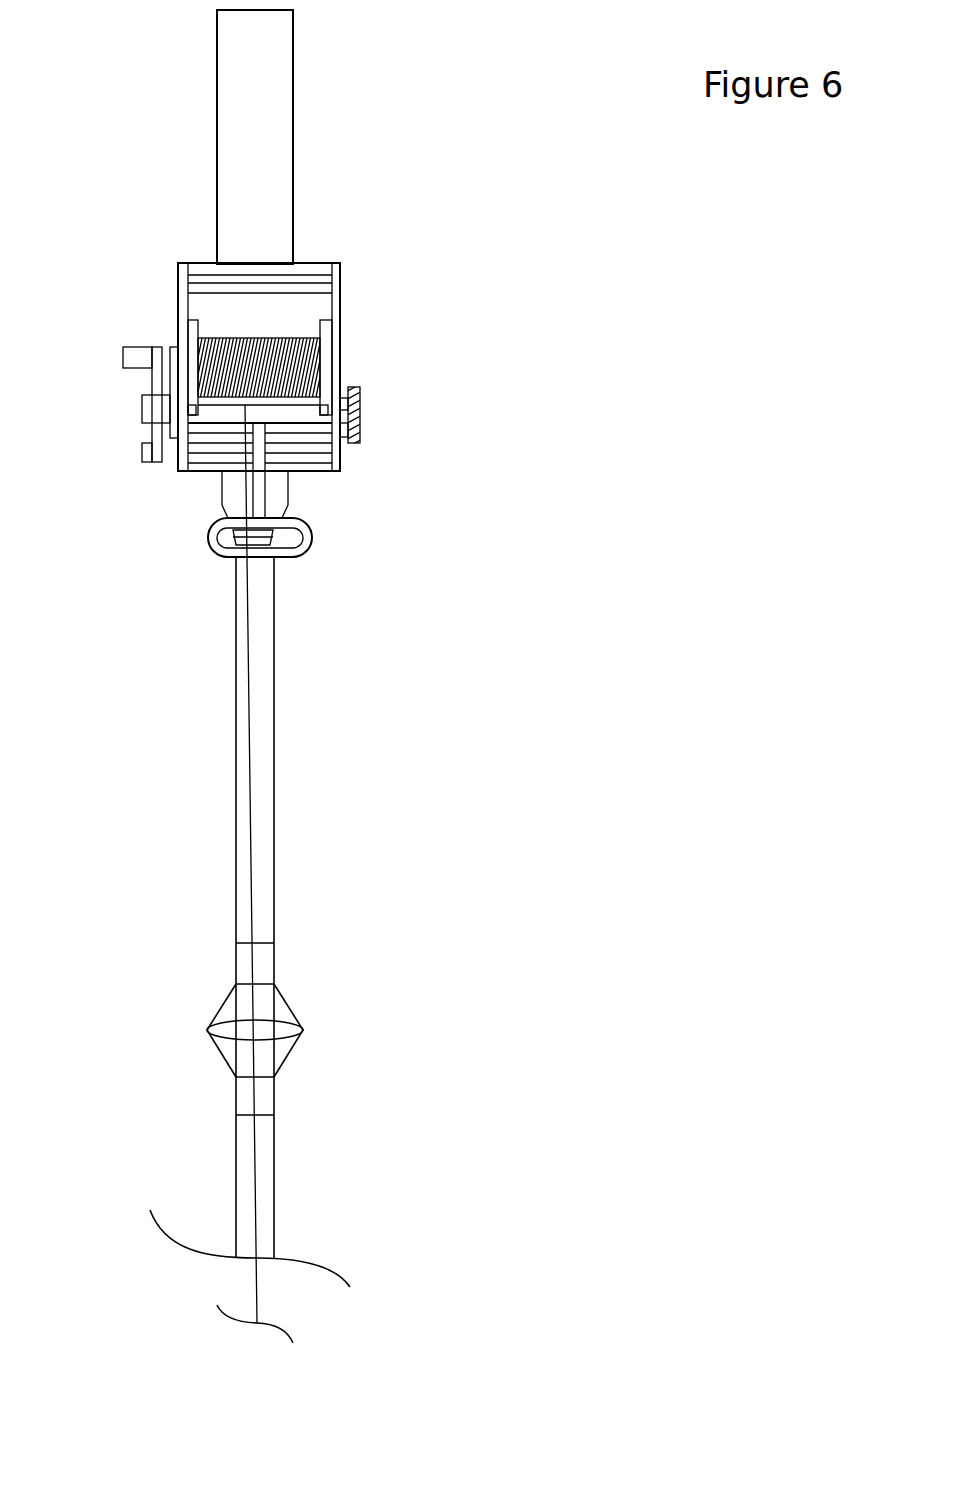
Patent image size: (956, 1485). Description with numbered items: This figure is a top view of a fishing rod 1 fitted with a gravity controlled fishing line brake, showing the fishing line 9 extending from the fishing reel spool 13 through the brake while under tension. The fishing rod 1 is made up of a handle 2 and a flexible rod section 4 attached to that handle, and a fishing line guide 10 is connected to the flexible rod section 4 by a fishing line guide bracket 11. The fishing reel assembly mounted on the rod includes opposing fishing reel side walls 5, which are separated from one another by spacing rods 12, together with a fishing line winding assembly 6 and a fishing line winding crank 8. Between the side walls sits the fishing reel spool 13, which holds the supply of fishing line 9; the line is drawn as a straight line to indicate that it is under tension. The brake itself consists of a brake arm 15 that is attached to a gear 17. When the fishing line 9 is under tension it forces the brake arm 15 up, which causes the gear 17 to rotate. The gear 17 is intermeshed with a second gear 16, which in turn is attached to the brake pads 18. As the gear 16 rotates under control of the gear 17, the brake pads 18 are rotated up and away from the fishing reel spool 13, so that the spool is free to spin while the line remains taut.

The fishing rod 1 is at (472, 135).
The handle 2 is at (275, 103).
The flexible rod section 4 is at (275, 642).
The fishing reel side walls 5 is at (335, 305).
The fishing line winding assembly 6 is at (170, 353).
The fishing line winding crank 8 is at (140, 405).
The fishing line 9 is at (256, 347).
The fishing line guide 10 is at (302, 1030).
The fishing line guide bracket 11 is at (282, 998).
The spacing rods 12 is at (322, 292).
The fishing reel spool 13 is at (192, 322).
The brake arm 15 is at (212, 539).
The gear 16 is at (353, 385).
The gear 17 is at (360, 427).
The brake pads 18 is at (327, 372).